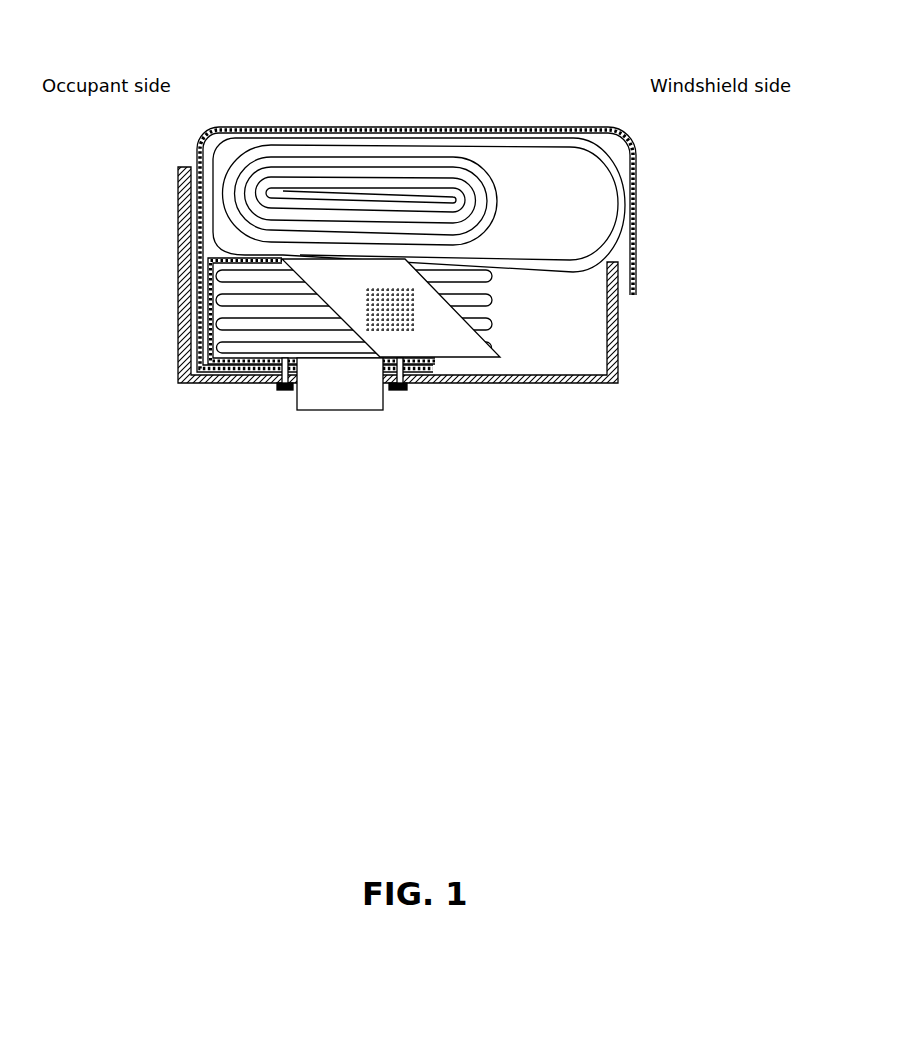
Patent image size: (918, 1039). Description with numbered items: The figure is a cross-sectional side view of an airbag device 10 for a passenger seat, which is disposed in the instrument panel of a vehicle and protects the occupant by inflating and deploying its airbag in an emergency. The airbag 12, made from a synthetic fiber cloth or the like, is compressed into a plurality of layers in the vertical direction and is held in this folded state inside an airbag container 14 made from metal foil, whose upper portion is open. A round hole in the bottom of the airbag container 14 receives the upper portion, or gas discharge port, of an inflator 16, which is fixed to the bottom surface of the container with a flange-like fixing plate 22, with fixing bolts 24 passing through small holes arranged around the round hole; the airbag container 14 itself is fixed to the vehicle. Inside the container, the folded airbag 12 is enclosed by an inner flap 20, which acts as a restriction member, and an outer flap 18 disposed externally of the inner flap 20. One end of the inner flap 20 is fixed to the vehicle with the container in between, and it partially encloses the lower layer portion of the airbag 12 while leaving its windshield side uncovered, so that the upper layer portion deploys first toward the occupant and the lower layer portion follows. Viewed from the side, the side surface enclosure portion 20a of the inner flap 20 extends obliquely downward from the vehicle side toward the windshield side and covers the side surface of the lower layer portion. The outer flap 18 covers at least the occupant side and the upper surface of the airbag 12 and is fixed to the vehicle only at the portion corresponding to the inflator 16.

The airbag device 10 is at (382, 104).
The airbag 12 is at (472, 153).
The airbag container 14 is at (603, 386).
The inflator 16 is at (350, 411).
The outer flap 18 is at (640, 158).
The inner flap 20 is at (218, 257).
The side surface enclosure portion 20a is at (473, 360).
The fixing plate 22 is at (417, 384).
The fixing bolts 24 is at (287, 388).